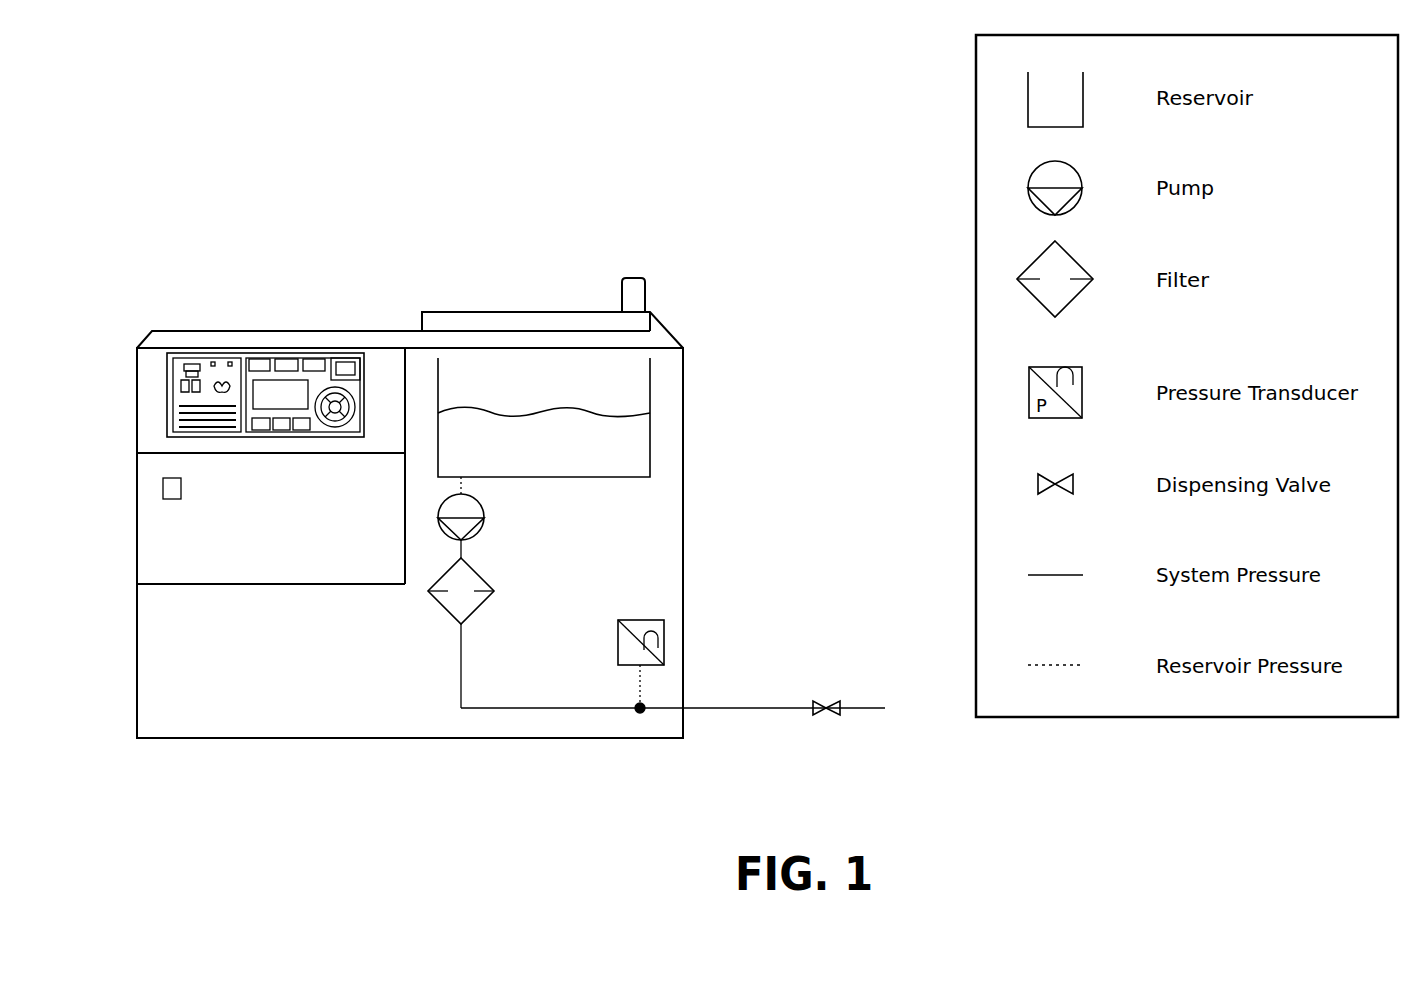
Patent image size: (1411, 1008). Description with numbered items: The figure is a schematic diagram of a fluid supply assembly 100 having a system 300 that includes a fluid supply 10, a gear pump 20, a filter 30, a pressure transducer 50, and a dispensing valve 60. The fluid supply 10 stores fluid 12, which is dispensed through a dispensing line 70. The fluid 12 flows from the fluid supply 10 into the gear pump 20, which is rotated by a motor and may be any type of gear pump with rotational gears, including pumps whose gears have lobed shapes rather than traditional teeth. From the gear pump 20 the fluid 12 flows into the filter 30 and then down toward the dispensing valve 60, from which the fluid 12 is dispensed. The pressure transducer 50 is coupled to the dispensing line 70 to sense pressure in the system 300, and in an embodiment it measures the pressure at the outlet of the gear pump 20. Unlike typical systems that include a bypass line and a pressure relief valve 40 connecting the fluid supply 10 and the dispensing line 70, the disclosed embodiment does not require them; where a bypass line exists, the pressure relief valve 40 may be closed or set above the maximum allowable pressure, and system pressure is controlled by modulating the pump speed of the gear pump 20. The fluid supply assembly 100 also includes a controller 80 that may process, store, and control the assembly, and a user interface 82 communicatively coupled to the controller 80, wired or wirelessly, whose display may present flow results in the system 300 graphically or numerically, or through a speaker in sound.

The system 300 is at (219, 126).
The fluid supply assembly 100 is at (532, 248).
The controller 80 is at (265, 347).
The user interface 82 is at (317, 376).
The fluid supply 10 is at (605, 417).
The fluid 12 is at (544, 430).
The gear pump 20 is at (484, 516).
The filter 30 is at (484, 580).
The pressure relief valve 40 is at (637, 705).
The pressure transducer 50 is at (642, 617).
The dispensing valve 60 is at (822, 701).
The dispensing line 70 is at (740, 710).